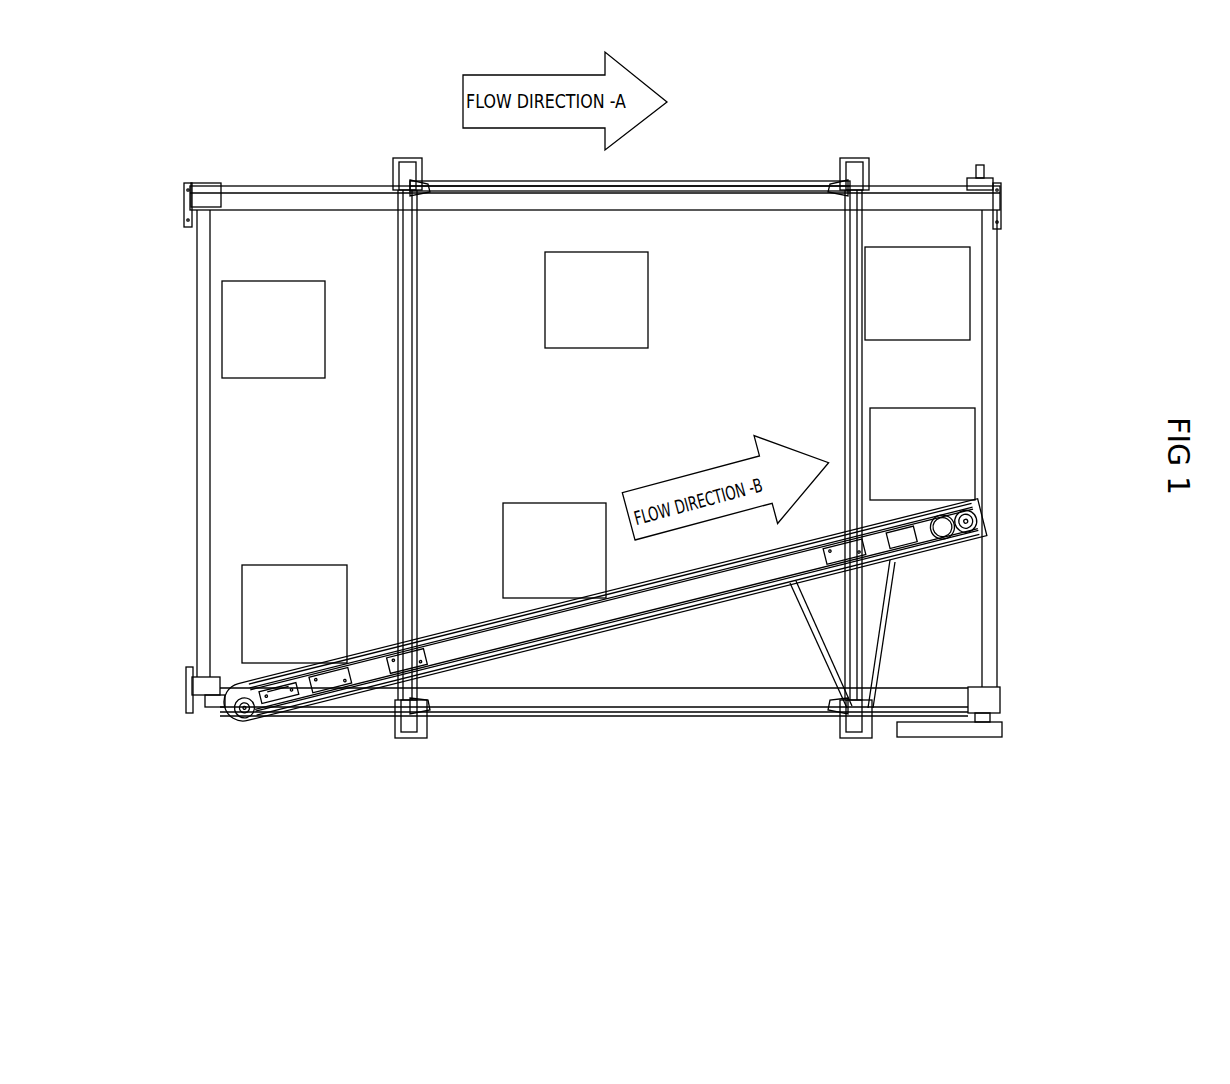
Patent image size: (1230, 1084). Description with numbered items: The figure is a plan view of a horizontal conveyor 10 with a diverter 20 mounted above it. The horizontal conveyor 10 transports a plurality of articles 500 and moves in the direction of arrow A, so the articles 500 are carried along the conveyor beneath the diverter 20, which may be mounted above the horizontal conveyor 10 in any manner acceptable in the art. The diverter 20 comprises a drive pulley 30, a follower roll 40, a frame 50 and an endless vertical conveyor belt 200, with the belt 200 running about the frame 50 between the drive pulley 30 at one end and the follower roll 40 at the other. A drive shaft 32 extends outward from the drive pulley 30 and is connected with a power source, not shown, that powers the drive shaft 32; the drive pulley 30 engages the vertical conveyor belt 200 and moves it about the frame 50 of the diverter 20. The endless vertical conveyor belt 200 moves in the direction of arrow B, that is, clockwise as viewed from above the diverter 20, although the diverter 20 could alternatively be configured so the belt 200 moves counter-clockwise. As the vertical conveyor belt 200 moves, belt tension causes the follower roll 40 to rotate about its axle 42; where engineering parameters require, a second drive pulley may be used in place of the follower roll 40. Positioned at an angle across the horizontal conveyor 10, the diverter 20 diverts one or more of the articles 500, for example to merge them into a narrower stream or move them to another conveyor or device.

The horizontal conveyor 10 is at (370, 173).
The diverter 20 is at (733, 617).
The drive pulley 30 is at (965, 535).
The drive shaft 32 is at (943, 542).
The follower roll 40 is at (248, 728).
The axle 42 is at (280, 718).
The frame 50 is at (685, 615).
The endless vertical conveyor belt 200 is at (583, 640).
The articles 500 is at (598, 455).